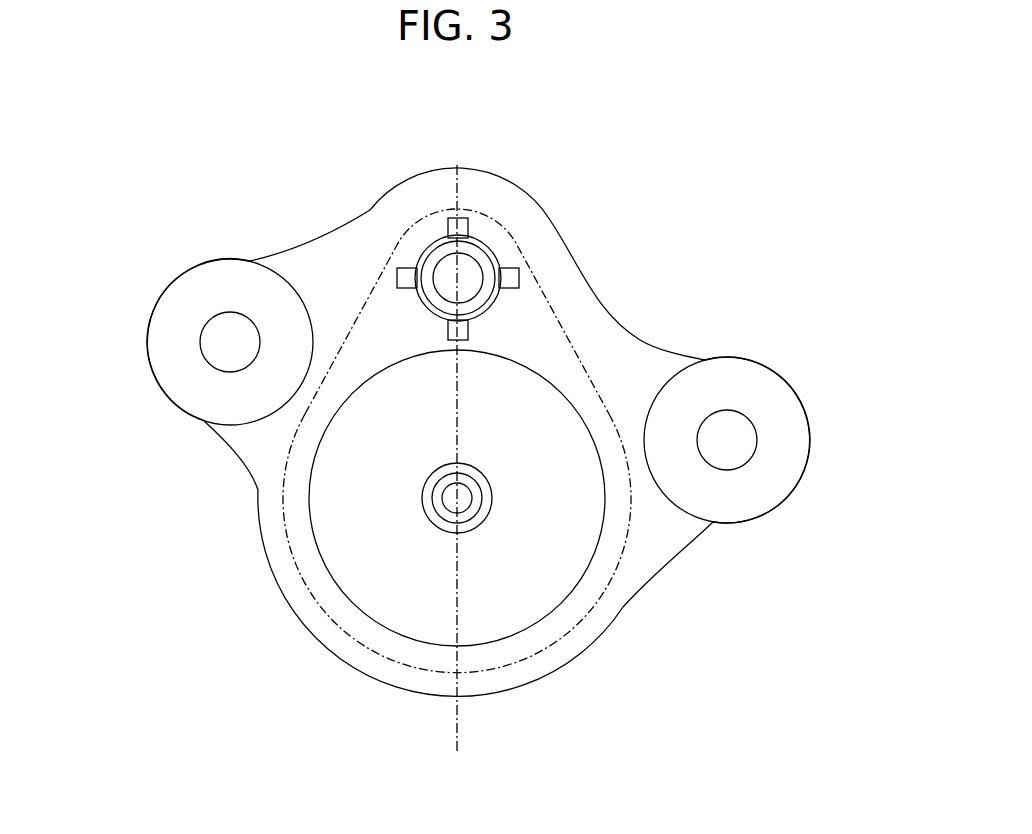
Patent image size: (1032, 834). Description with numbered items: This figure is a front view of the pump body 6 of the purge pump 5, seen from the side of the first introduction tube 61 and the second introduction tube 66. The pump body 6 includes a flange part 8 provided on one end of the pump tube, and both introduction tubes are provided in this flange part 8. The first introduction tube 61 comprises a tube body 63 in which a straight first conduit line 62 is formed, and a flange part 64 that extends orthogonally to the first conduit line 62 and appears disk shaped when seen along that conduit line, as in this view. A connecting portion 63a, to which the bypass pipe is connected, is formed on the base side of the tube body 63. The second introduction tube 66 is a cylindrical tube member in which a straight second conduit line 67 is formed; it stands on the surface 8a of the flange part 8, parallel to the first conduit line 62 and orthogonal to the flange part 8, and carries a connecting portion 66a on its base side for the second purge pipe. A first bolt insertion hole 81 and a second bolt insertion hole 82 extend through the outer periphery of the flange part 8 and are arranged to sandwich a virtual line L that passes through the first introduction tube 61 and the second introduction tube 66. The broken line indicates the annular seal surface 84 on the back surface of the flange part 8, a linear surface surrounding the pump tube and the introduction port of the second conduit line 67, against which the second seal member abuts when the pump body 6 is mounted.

The purge pump 5 is at (753, 117).
The pump body 6 is at (628, 210).
The flange part 8 is at (613, 320).
The surface 8a is at (628, 365).
The annular seal surface 84 is at (615, 573).
The first bolt insertion hole 81 is at (244, 364).
The second bolt insertion hole 82 is at (706, 454).
The first introduction tube 61 is at (525, 533).
The first conduit line 62 is at (460, 500).
The tube body 63 is at (432, 491).
The connecting portion 63a is at (437, 522).
The flange part 64 is at (390, 598).
The second introduction tube 66 is at (492, 247).
The connecting portion 66a is at (464, 215).
The second conduit line 67 is at (445, 292).
The virtual line L is at (457, 745).